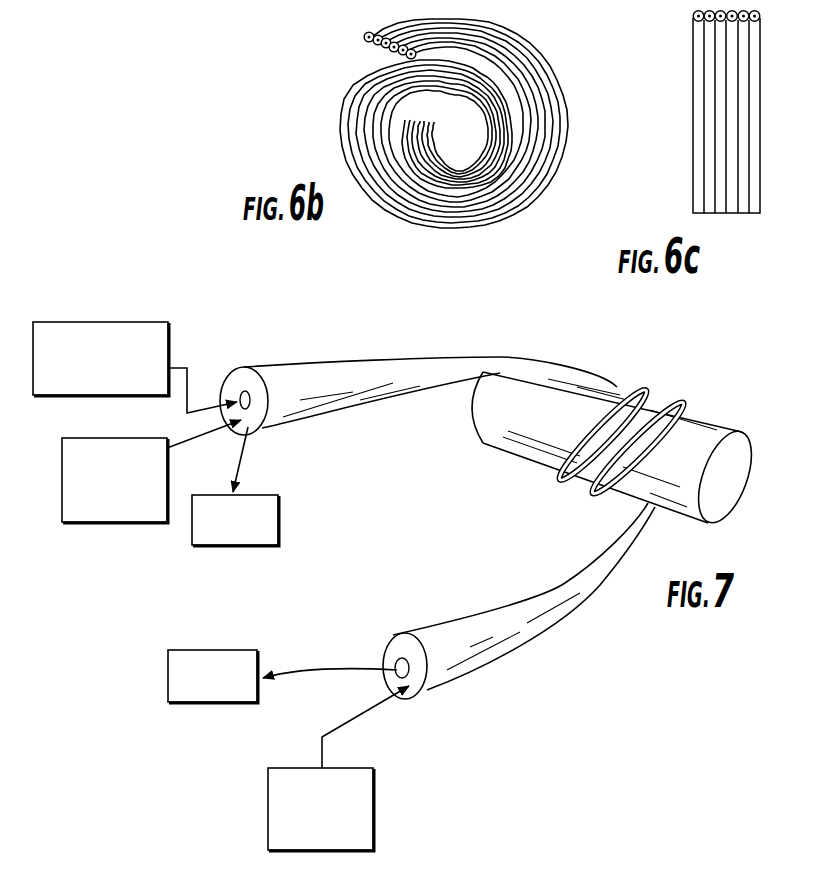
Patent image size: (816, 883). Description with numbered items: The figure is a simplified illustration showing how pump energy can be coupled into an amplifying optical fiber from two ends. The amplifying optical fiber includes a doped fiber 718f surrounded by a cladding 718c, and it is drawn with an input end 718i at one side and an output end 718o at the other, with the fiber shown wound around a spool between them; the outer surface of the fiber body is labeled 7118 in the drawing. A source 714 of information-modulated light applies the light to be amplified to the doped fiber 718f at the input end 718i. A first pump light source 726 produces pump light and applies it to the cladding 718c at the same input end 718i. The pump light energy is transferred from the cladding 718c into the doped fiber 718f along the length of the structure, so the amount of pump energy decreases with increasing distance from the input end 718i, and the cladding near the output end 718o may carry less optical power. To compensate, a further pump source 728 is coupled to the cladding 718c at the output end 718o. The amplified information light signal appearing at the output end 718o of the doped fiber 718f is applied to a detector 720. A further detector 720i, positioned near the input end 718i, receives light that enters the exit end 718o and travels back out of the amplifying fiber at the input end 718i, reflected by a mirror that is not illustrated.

The source of information-modulated light 714 is at (133, 322).
The input end 718i is at (295, 340).
The doped fiber 718f is at (223, 387).
The cladding 718c is at (258, 418).
The fiber cladding / outer surface 7118 is at (373, 363).
The further detector 720i is at (279, 533).
The first pump light source 726 is at (120, 523).
The output end 718o is at (444, 699).
The detector 720 is at (218, 650).
The pump source 728 is at (374, 825).